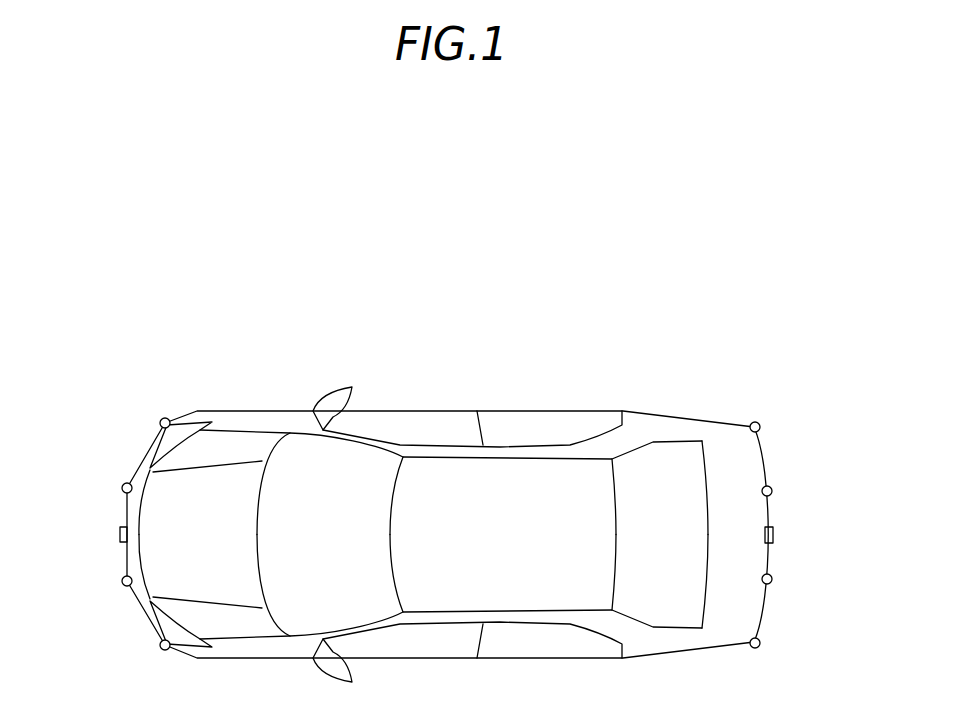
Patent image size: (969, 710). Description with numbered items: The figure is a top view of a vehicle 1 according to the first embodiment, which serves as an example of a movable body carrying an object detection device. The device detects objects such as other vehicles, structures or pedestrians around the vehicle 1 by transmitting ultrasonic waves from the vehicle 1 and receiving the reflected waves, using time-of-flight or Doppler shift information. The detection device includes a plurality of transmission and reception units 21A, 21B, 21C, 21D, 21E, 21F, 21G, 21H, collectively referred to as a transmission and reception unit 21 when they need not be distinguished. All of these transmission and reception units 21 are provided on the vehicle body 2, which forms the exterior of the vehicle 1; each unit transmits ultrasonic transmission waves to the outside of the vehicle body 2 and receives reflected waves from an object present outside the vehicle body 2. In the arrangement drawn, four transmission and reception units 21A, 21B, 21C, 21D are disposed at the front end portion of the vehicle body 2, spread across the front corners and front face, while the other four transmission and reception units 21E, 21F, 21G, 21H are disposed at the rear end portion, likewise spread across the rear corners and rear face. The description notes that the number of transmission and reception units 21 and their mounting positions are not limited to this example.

The vehicle 1 is at (559, 327).
The vehicle body 2 is at (718, 413).
The transmission and reception unit 21 is at (448, 538).
The transmission and reception unit 21A is at (161, 421).
The transmission and reception unit 21B is at (123, 486).
The transmission and reception unit 21C is at (123, 584).
The transmission and reception unit 21D is at (161, 648).
The transmission and reception unit 21E is at (760, 425).
The transmission and reception unit 21F is at (771, 489).
The transmission and reception unit 21G is at (771, 582).
The transmission and reception unit 21H is at (760, 646).